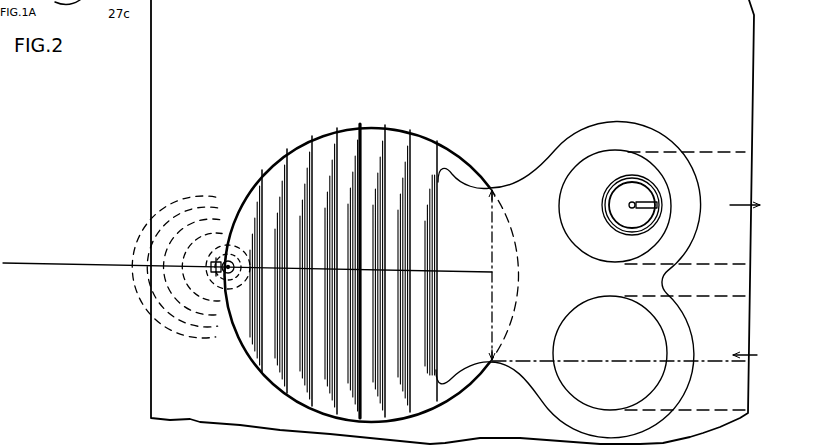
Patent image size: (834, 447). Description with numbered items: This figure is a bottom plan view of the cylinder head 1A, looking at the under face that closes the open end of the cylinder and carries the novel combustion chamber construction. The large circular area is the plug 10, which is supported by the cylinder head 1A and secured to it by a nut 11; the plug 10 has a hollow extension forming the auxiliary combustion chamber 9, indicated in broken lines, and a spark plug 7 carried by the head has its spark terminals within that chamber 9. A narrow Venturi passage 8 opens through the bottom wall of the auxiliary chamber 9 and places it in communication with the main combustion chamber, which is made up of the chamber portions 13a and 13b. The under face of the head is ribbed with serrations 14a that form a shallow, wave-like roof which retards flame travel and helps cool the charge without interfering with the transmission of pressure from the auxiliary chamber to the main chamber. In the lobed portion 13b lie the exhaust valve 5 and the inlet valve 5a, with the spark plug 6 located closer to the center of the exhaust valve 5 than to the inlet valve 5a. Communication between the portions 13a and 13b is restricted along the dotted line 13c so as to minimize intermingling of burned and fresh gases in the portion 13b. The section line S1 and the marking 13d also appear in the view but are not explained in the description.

The cylinder head 1A is at (150, 118).
The nut 11 is at (156, 277).
The main combustion chamber portion 13b is at (595, 280).
The plug 10 is at (322, 140).
The hidden disc edge 13d is at (496, 214).
The dotted line 13c is at (470, 162).
The main combustion chamber portion 13a is at (604, 275).
The serrations 14a is at (362, 121).
The auxiliary combustion chamber 9 is at (222, 257).
The Venturi passage 8 is at (218, 274).
The spark plug 7 is at (213, 267).
The exhaust valve 5 is at (642, 168).
The spark plug 6 is at (627, 196).
The inlet valve 5a is at (657, 348).
The section line S1 is at (57, 266).